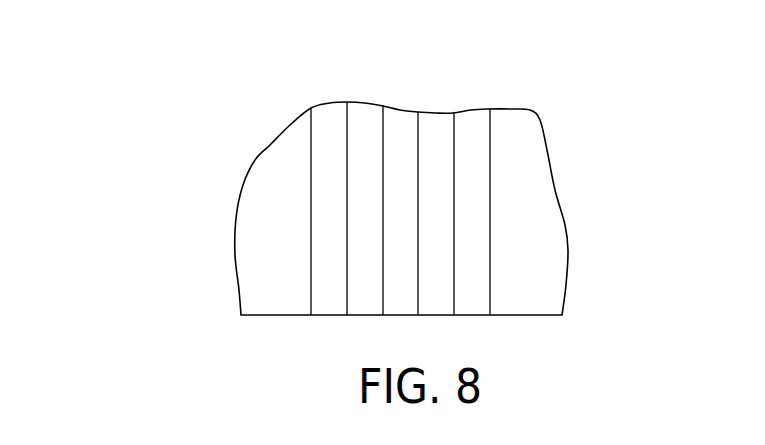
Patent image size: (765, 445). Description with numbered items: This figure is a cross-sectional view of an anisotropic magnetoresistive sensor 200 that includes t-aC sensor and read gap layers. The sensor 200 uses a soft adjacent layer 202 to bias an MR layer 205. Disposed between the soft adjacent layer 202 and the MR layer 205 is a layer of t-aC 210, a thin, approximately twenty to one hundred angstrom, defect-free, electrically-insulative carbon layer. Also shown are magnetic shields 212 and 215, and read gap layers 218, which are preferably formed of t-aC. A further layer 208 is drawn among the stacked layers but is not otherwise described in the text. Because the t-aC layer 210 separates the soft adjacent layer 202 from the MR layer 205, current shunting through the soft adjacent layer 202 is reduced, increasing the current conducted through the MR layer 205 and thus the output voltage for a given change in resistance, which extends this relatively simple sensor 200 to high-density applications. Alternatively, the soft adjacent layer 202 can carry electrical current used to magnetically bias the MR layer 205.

The anisotropic magnetoresistive sensor 200 is at (188, 207).
The soft adjacent layer 202 is at (435, 115).
The MR layer 205 is at (365, 108).
The feature 208 is at (468, 112).
The layer of t-aC 210 is at (399, 117).
The magnetic shield 212 is at (537, 123).
The magnetic shield 215 is at (277, 143).
The read gap layers 218 is at (328, 108).